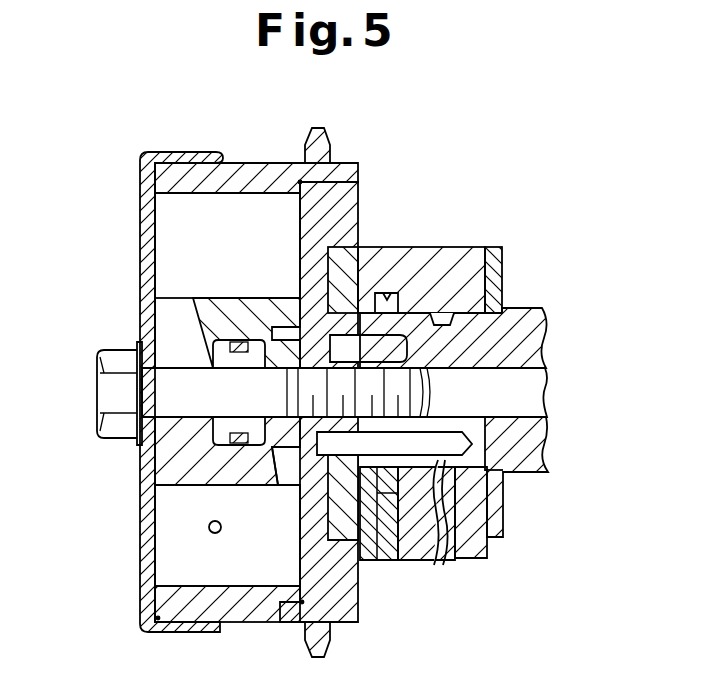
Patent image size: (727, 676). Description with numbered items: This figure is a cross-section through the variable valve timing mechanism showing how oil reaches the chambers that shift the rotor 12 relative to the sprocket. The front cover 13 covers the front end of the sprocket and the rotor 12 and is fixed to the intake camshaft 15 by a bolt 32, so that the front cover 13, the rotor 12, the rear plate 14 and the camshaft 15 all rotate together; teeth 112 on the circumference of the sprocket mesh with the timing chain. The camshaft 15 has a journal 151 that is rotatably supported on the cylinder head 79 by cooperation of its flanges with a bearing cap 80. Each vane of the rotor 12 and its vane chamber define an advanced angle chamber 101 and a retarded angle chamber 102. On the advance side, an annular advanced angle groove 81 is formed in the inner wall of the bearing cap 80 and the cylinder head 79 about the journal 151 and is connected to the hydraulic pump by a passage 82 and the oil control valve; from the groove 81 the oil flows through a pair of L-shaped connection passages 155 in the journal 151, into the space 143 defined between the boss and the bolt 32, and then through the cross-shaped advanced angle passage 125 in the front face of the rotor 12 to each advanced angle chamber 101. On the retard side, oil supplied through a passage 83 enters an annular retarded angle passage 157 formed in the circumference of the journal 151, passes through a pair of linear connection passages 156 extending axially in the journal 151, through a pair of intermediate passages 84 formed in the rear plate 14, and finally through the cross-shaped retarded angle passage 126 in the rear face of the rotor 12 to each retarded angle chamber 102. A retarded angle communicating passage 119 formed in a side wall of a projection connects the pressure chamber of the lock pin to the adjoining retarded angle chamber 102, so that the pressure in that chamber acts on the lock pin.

The rotor 12 is at (256, 622).
The front cover 13 is at (140, 222).
The rear plate 14 is at (358, 200).
The intake camshaft 15 is at (537, 307).
The bolt 32 is at (97, 400).
The cylinder head 79 is at (488, 559).
The bearing cap 80 is at (456, 248).
The advanced angle groove 81 is at (387, 297).
The passage 82 is at (388, 550).
The passage 83 is at (444, 566).
The intermediate passages 84 is at (302, 518).
The advanced angle chamber 101 is at (246, 247).
The retarded angle chamber 102 is at (238, 567).
The teeth 112 is at (328, 130).
The retarded angle communicating passage 119 is at (209, 527).
The advanced angle passage 125 is at (207, 350).
The retarded angle passage 126 is at (292, 485).
The space 143 is at (235, 420).
The journal 151 is at (499, 527).
The connection passages 155 is at (338, 347).
The connection passages 156 is at (368, 442).
The retarded angle passage 157 is at (436, 565).